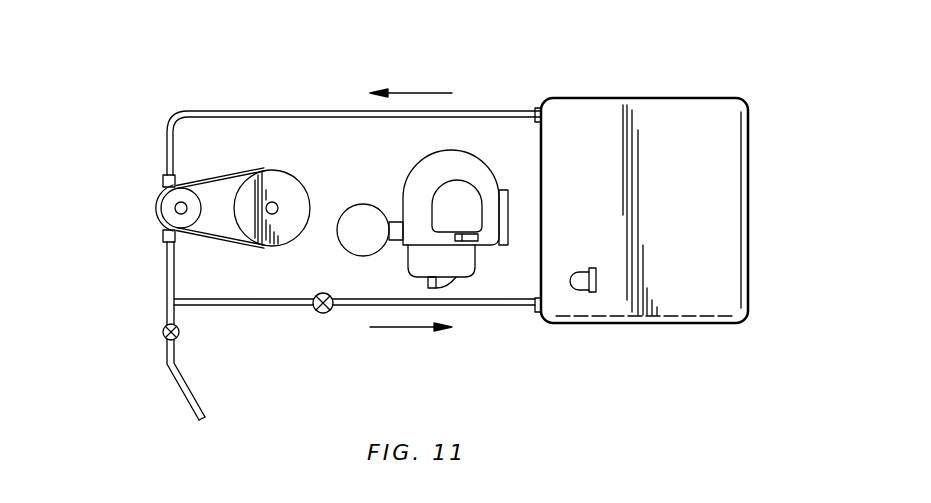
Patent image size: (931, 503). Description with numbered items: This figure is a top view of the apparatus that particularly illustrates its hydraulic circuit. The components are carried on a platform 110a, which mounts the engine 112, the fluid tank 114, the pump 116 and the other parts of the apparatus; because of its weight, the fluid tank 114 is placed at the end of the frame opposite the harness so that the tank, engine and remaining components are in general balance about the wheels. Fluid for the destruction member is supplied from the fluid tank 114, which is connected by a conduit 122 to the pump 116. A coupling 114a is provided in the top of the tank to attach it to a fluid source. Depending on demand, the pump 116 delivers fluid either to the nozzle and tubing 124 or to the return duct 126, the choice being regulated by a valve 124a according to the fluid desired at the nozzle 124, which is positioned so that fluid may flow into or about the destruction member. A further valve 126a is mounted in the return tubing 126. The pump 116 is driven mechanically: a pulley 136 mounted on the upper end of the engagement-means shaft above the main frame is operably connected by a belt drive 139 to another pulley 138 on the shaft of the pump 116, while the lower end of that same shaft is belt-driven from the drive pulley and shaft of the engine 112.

The platform 110a is at (434, 174).
The engine 112 is at (468, 163).
The fluid tank 114 is at (683, 219).
The coupling 114a is at (592, 293).
The pump 116 is at (160, 216).
The conduit 122 is at (246, 110).
The nozzle and tubing 124 is at (172, 388).
The valve 124a is at (163, 332).
The return duct 126 is at (248, 307).
The valve 126a is at (329, 313).
The pulley 136 is at (252, 230).
The pulley 138 is at (168, 205).
The belt drive 139 is at (220, 179).